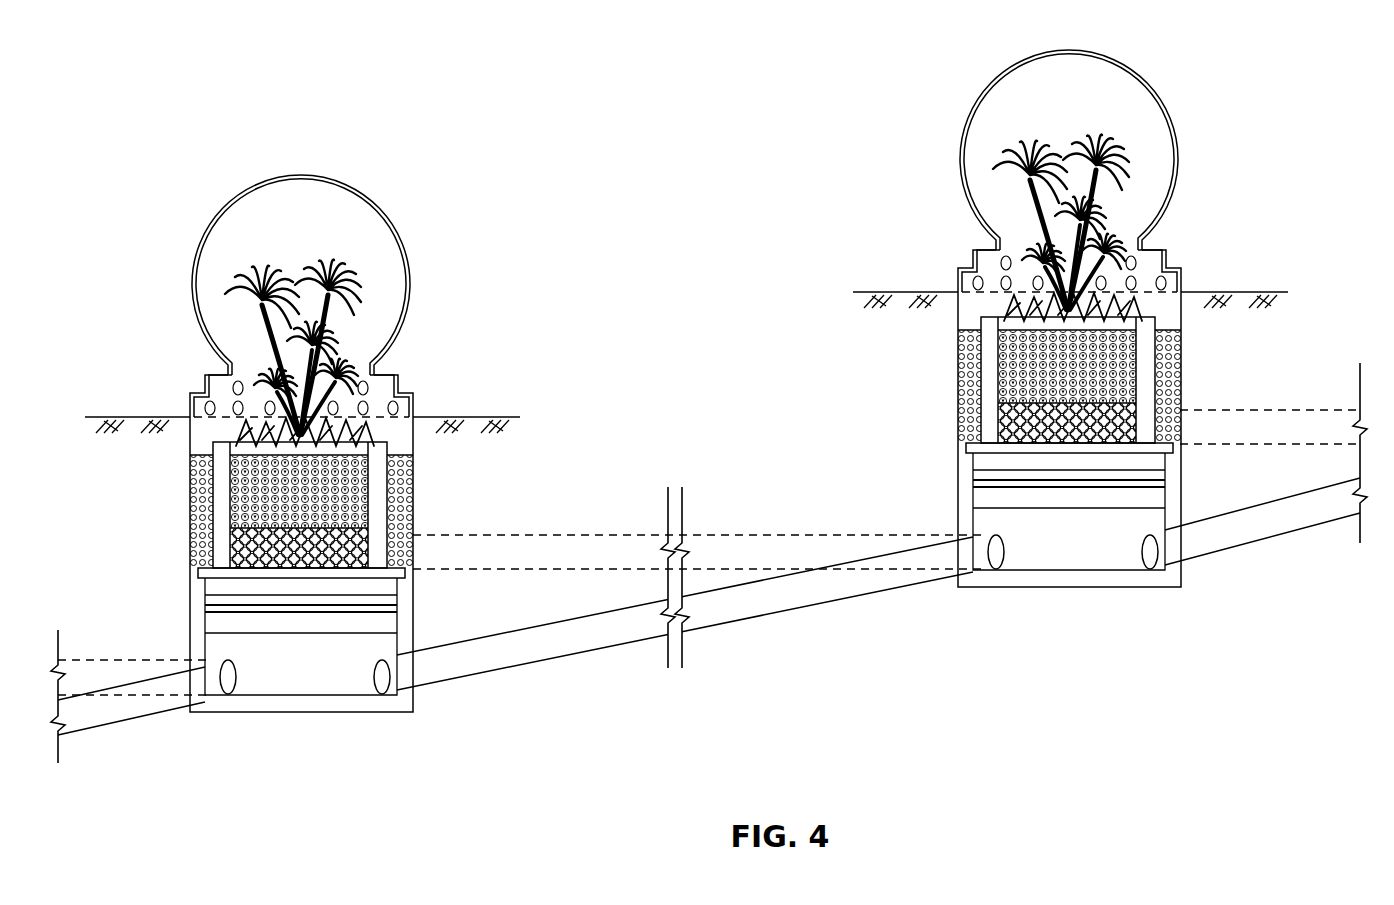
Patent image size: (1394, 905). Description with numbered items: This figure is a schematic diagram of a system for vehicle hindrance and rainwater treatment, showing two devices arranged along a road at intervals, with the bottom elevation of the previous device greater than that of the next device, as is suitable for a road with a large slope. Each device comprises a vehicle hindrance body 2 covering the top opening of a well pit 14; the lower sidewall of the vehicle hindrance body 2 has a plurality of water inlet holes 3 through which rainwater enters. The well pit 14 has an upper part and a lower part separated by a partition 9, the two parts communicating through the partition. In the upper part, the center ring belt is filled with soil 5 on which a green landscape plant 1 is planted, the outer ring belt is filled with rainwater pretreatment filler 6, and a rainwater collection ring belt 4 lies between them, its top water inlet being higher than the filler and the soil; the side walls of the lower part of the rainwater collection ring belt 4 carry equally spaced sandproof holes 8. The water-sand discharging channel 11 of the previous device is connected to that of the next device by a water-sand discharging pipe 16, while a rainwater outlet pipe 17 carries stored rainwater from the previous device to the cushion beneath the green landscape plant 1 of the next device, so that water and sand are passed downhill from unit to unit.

The green landscape plant 1 is at (283, 293).
The vehicle hindrance body 2 is at (408, 268).
The water inlet hole 3 is at (397, 407).
The rainwater collection ring belt 4 is at (378, 482).
The soil 5 is at (240, 502).
The rainwater pretreatment filler 6 is at (405, 497).
The sandproof hole 8 is at (370, 553).
The partition 9 is at (377, 603).
The water-sand discharging channel 11 is at (237, 663).
The well pit 14 is at (190, 568).
The water-sand discharging pipe 16 is at (125, 718).
The rainwater outlet pipe 17 is at (86, 675).